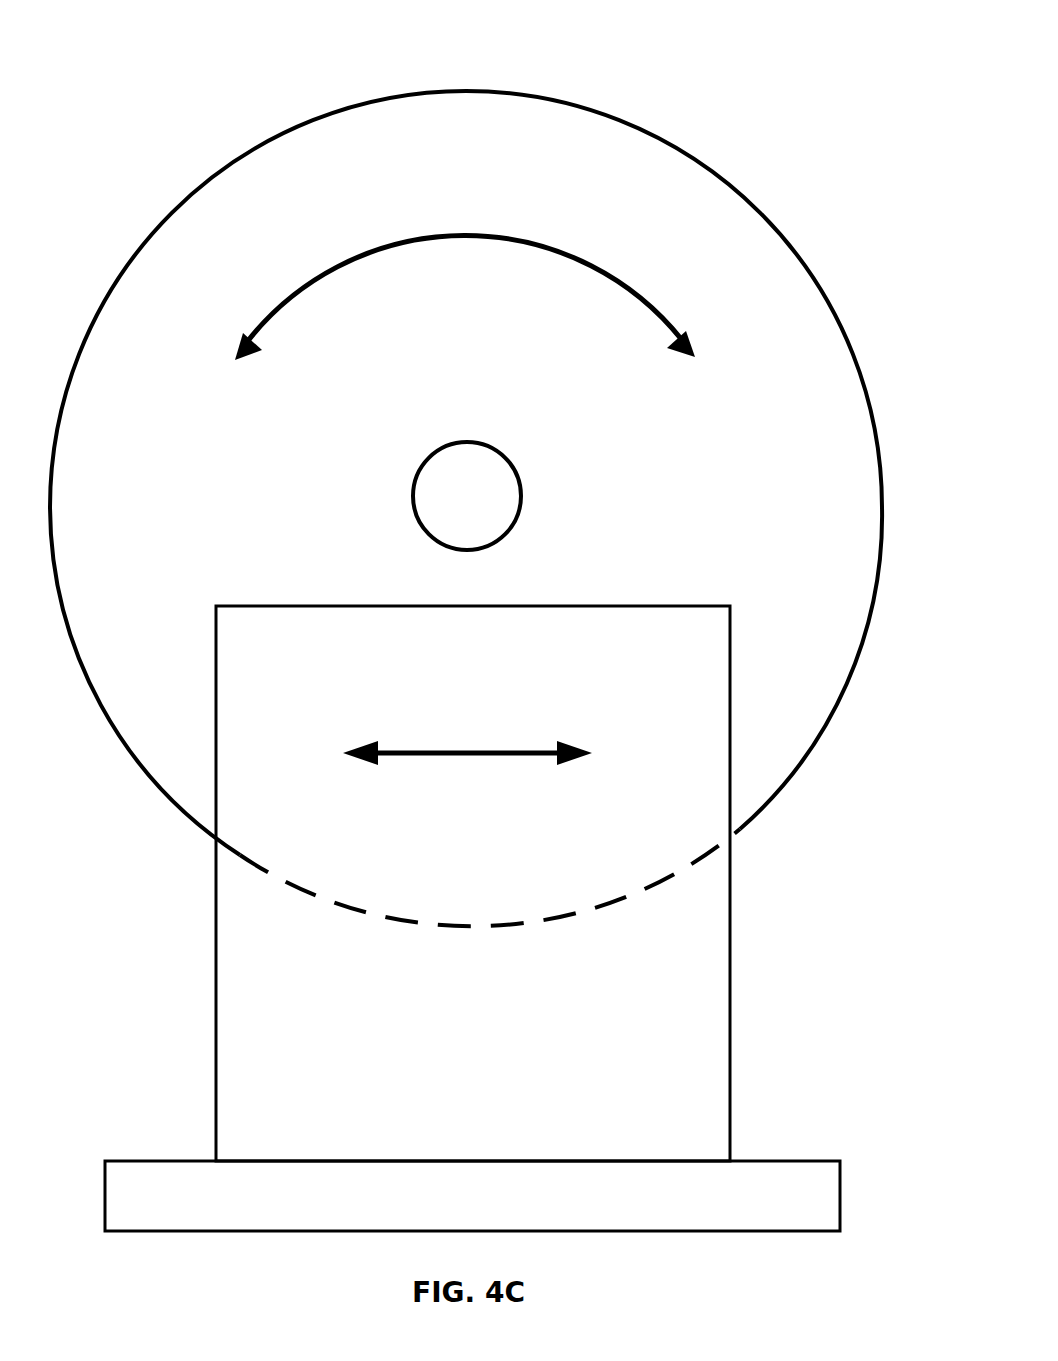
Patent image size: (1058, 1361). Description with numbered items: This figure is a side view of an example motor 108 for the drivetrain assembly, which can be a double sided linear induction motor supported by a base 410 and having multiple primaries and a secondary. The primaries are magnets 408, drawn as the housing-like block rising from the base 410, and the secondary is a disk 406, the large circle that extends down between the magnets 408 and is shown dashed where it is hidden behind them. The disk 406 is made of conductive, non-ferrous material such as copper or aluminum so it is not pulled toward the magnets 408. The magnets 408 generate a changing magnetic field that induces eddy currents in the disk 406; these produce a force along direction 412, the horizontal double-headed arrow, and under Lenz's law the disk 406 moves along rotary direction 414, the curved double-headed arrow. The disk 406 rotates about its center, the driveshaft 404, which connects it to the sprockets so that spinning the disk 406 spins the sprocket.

The motor 108 is at (110, 80).
The driveshaft 404 is at (521, 492).
The disk 406 is at (700, 158).
The magnets 408 is at (730, 945).
The base 410 is at (840, 1193).
The direction 412 is at (447, 750).
The rotary direction 414 is at (483, 228).